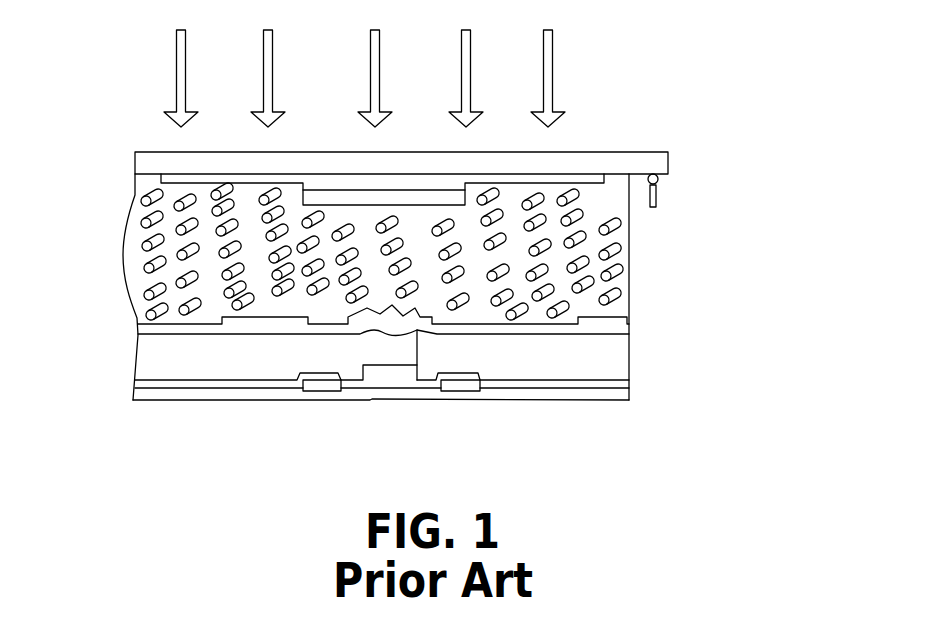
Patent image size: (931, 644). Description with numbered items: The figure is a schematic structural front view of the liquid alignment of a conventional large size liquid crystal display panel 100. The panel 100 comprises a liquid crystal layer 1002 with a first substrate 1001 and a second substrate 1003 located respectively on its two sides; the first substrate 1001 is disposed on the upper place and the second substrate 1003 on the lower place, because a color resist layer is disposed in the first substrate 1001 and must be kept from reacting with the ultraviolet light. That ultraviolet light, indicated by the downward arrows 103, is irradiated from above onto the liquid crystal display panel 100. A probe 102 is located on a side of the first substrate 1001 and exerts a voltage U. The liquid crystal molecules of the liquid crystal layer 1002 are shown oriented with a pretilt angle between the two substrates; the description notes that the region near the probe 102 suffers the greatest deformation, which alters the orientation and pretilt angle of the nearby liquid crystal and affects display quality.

The liquid crystal display panel 100 is at (130, 110).
The incident external light 103 is at (547, 60).
The first substrate 1001 is at (583, 166).
The probe 102 is at (657, 200).
The liquid crystal layer 1002 is at (612, 271).
The second substrate 1003 is at (597, 360).